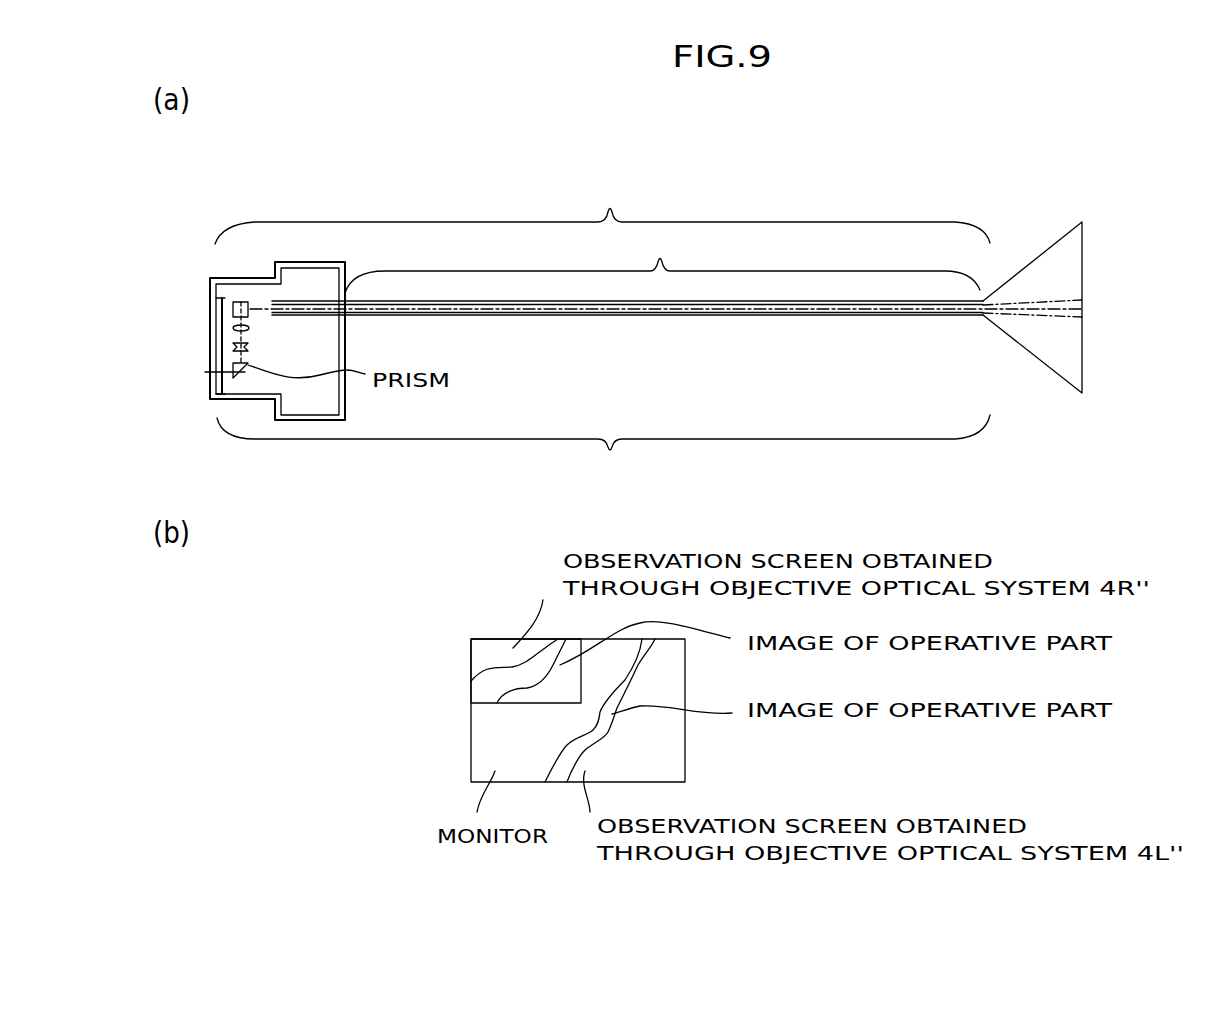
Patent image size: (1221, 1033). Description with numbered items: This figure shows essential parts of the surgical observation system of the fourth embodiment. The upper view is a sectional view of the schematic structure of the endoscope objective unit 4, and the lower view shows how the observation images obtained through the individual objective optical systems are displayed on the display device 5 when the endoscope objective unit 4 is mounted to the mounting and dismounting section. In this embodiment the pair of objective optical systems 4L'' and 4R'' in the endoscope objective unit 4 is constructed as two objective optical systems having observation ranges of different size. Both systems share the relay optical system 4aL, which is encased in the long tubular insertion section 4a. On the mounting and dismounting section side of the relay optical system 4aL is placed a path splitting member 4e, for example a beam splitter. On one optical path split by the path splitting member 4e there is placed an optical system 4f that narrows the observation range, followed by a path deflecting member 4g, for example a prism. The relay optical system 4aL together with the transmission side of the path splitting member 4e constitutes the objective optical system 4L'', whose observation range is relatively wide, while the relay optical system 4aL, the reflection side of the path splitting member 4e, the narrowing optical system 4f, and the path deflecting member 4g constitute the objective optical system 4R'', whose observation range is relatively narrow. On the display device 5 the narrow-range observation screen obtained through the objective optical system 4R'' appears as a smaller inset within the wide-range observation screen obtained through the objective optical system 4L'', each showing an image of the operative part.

The endoscope objective unit 4 is at (667, 172).
The objective optical system 4L'' is at (648, 242).
The objective optical system 4R'' is at (649, 399).
The tubular insertion section 4a is at (627, 272).
The relay optical system 4aL is at (600, 316).
The path splitting member 4e is at (244, 302).
The optical system narrowing the observation range 4f is at (256, 320).
The path deflecting member 4g is at (246, 366).
The display device 5 is at (483, 735).